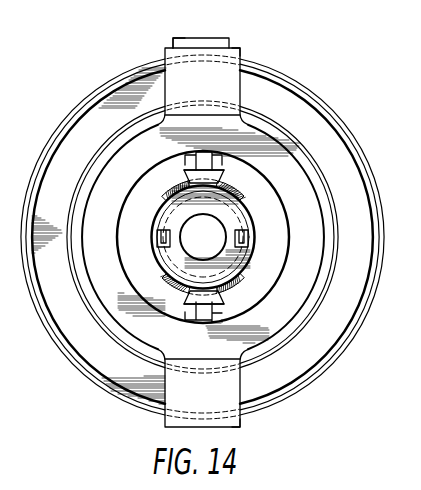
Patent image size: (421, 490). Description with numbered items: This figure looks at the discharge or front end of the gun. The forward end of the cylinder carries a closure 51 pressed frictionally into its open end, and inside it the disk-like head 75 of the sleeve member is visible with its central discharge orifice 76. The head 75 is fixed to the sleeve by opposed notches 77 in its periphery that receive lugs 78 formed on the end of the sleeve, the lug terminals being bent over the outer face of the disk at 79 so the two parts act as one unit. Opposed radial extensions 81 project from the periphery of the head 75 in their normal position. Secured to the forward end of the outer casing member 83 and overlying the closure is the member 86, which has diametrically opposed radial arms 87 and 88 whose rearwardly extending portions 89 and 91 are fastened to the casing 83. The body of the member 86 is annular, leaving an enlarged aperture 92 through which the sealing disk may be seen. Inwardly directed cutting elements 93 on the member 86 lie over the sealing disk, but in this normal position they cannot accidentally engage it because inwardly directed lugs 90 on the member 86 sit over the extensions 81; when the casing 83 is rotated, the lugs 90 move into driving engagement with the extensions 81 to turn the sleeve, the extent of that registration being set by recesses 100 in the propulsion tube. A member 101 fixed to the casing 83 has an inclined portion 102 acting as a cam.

The closure 51 is at (79, 348).
The disk-like head 75 is at (176, 203).
The discharge orifice 76 is at (182, 244).
The notches 77 is at (250, 228).
The lugs 78 is at (259, 239).
The bent-over lug terminals 79 is at (235, 238).
The radial extensions 81 is at (221, 299).
The outer casing member 83 is at (356, 350).
The end member 86 is at (100, 186).
The radial arm 87 is at (228, 86).
The radial arm 88 is at (230, 387).
The rearwardly extending portion 89 is at (238, 47).
The lugs 90 is at (186, 300).
The rearwardly extending portion 91 is at (241, 428).
The aperture 92 is at (281, 279).
The cutting elements 93 is at (186, 317).
The recesses 100 is at (163, 285).
The cam member 101 is at (193, 40).
The inclined portion 102 is at (183, 40).